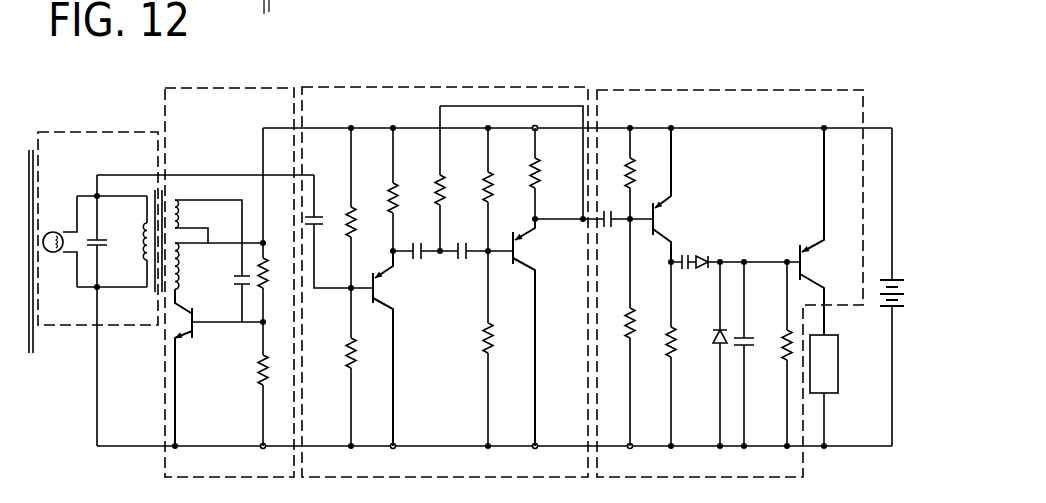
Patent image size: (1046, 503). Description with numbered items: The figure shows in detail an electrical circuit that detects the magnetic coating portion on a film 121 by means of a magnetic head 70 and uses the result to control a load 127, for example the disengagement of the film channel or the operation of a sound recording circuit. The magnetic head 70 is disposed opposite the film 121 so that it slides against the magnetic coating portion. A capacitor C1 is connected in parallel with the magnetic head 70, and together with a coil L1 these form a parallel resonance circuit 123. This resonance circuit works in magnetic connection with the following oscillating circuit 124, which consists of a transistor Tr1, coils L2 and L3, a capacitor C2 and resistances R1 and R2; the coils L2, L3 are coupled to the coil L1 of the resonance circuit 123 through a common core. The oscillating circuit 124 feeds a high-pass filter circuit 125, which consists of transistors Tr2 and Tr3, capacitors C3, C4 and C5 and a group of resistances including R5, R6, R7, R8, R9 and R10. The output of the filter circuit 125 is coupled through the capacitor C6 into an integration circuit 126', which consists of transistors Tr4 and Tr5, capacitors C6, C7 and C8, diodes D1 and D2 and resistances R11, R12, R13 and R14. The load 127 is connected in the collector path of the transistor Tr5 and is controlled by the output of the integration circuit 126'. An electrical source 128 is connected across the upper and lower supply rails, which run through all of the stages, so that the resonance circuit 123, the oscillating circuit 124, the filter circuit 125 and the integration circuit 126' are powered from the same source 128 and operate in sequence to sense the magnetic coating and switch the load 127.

The magnetic head 70 is at (56, 232).
The film 121 is at (33, 338).
The parallel resonance circuit 123 is at (99, 130).
The oscillating circuit 124 is at (235, 84).
The high-pass filter circuit 125 is at (415, 85).
The integration circuit 126' is at (730, 256).
The load 127 is at (828, 367).
The electrical source 128 is at (882, 292).
The capacitor C1 is at (100, 238).
The capacitor C2 is at (235, 292).
The capacitor C3 is at (318, 214).
The capacitor C4 is at (415, 259).
The capacitor C5 is at (462, 259).
The capacitor C6 is at (611, 230).
The capacitor C7 is at (673, 328).
The capacitor C8 is at (750, 335).
The coil L1 is at (134, 241).
The coil L2 is at (190, 269).
The coil L3 is at (190, 214).
The resistance R1 is at (272, 283).
The resistance R2 is at (256, 371).
The resistance R5 is at (348, 348).
The resistance R6 is at (397, 196).
The resistance R7 is at (446, 186).
The resistance R8 is at (493, 180).
The resistance R9 is at (352, 216).
The resistance R10 is at (540, 180).
The resistance R11 is at (637, 173).
The resistance R12 is at (650, 332).
The resistance R13 is at (640, 314).
The resistance R14 is at (783, 347).
The transistor Tr1 is at (177, 330).
The transistor Tr2 is at (380, 296).
The transistor Tr3 is at (520, 246).
The transistor Tr4 is at (660, 225).
The transistor Tr5 is at (808, 262).
The diode D1 is at (707, 258).
The diode D2 is at (715, 336).